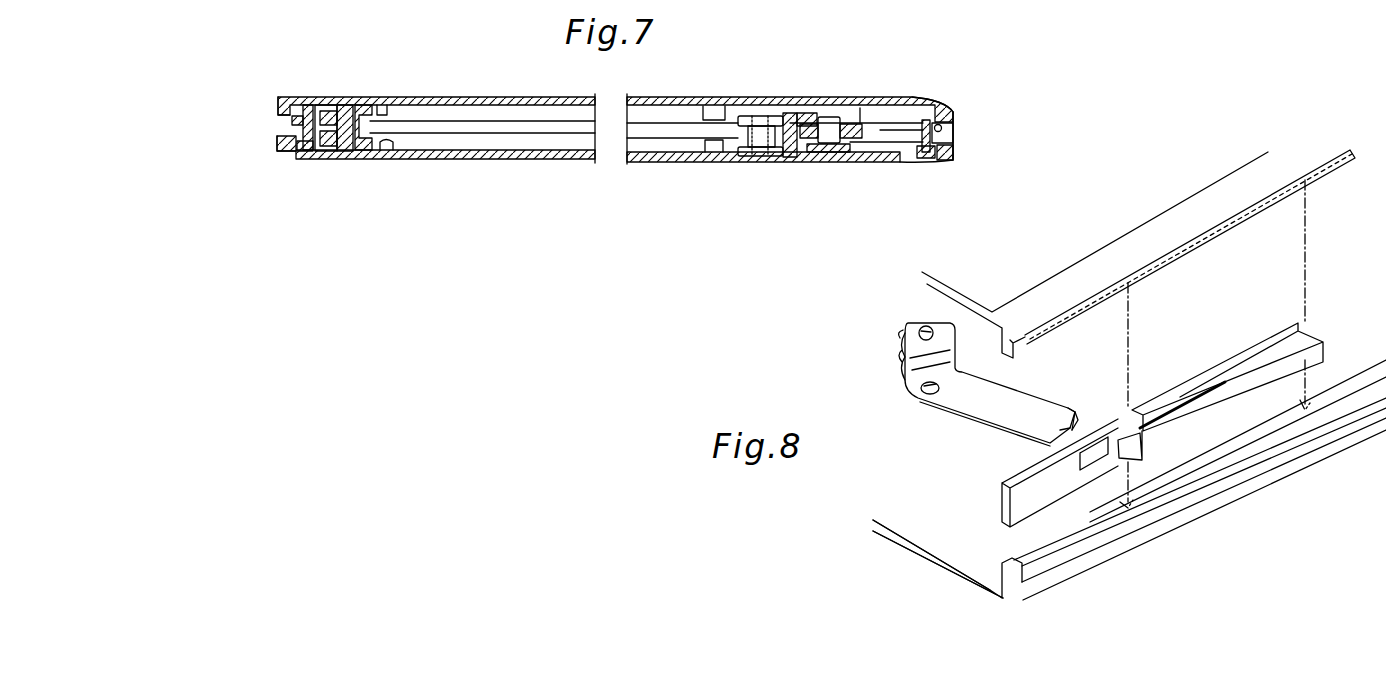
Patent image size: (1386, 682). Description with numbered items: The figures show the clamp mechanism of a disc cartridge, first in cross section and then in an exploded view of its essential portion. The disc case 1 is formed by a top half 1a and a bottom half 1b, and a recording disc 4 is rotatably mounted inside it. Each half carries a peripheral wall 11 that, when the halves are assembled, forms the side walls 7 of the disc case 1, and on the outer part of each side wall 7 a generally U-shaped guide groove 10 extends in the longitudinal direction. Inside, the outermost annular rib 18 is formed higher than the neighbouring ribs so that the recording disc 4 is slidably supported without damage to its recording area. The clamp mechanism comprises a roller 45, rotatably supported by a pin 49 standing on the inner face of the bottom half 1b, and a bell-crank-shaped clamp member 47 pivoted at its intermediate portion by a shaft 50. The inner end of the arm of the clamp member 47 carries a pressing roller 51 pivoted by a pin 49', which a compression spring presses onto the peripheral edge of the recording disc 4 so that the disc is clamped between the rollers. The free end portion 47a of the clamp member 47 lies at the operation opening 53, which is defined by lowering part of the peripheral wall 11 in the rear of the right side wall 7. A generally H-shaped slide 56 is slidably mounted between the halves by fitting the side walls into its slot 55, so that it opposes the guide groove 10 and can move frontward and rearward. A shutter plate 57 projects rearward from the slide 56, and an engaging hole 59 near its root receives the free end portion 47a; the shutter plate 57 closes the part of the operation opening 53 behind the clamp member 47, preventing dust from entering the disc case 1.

In FIG. 7, the disc case 1 is at (530, 95).
In FIG. 7, the top half 1a is at (432, 97).
In FIG. 8, the top half 1a is at (921, 290).
In FIG. 7, the bottom half 1b is at (432, 159).
In FIG. 8, the bottom half 1b is at (913, 550).
In FIG. 7, the recording disc 4 is at (493, 120).
In FIG. 7, the side wall 7 is at (278, 151).
In FIG. 7, the guide groove 10 is at (279, 121).
In FIG. 8, the guide groove 10 is at (1360, 398).
In FIG. 7, the peripheral wall 11 is at (309, 104).
In FIG. 8, the peripheral wall 11 is at (1330, 184).
In FIG. 7, the outermost annular rib 18 is at (392, 151).
In FIG. 7, the roller 45 is at (302, 152).
In FIG. 7, the clamp member 47 is at (880, 122).
In FIG. 8, the clamp member 47 is at (976, 426).
In FIG. 8, the free end portion 47a is at (1075, 410).
In FIG. 7, the pin 49 is at (334, 107).
In FIG. 7, the pin 49' is at (775, 176).
In FIG. 8, the pin 49' is at (955, 336).
In FIG. 7, the shaft 50 is at (826, 151).
In FIG. 7, the pressing roller 51 is at (776, 152).
In FIG. 8, the pressing roller 51 is at (902, 340).
In FIG. 7, the operation opening 53 is at (937, 124).
In FIG. 8, the operation opening 53 is at (1050, 330).
In FIG. 8, the slot 55 is at (1224, 383).
In FIG. 7, the slide 56 is at (955, 150).
In FIG. 8, the slide 56 is at (1235, 355).
In FIG. 7, the shutter plate 57 is at (918, 156).
In FIG. 8, the shutter plate 57 is at (1038, 500).
In FIG. 8, the engaging hole 59 is at (1108, 463).